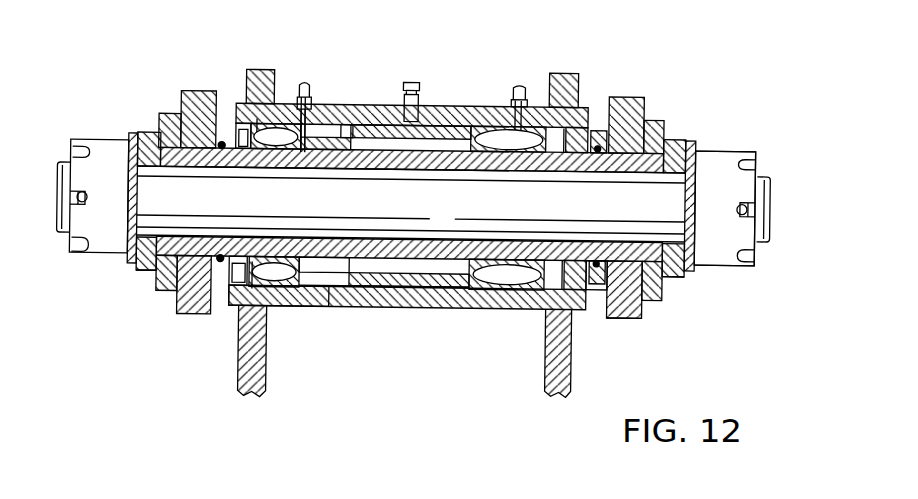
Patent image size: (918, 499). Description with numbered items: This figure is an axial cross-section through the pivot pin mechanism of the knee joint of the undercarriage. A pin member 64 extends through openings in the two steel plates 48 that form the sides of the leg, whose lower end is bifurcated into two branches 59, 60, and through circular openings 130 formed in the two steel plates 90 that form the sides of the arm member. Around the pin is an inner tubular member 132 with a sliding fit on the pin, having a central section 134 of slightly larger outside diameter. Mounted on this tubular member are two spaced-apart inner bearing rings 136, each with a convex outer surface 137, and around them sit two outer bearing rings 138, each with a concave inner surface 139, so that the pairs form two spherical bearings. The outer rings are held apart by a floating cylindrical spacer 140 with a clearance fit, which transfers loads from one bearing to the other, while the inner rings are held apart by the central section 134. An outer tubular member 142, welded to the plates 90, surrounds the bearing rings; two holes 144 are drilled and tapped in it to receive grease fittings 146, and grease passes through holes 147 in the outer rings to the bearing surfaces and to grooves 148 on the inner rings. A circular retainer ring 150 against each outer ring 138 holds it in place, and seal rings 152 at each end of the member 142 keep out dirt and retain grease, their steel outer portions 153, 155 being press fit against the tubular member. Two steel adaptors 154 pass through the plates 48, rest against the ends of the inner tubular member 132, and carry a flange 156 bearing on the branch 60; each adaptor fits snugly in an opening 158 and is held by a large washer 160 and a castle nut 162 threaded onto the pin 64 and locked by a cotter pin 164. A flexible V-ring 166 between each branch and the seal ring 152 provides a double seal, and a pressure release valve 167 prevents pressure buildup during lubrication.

The steel plates 48 is at (196, 100).
The branch 59 is at (165, 118).
The branch 60 is at (651, 125).
The pin member 64 is at (768, 232).
The steel plates 90 is at (258, 75).
The circular openings 130 is at (246, 108).
The inner tubular member 132 is at (378, 146).
The central section 134 is at (368, 268).
The inner bearing rings 136 is at (505, 270).
The outer surface 137 is at (369, 147).
The outer bearing rings 138 is at (282, 122).
The inner surface 139 is at (321, 290).
The cylindrical spacer 140 is at (410, 283).
The outer tubular member 142 is at (428, 306).
The holes 144 is at (350, 112).
The grease fittings 146 is at (315, 110).
The holes 147 is at (313, 148).
The grooves 148 is at (286, 148).
The retainer ring 150 is at (548, 312).
The seal rings 152 is at (590, 127).
The outer portion 153 is at (589, 276).
The steel adaptors 154 is at (140, 135).
The outer portion 155 is at (602, 318).
The flange 156 is at (148, 270).
The opening 158 is at (677, 276).
The washer 160 is at (131, 140).
The castle nut 162 is at (714, 167).
The cotter pin 164 is at (84, 205).
The V-ring 166 is at (220, 262).
The pressure release valve 167 is at (425, 97).